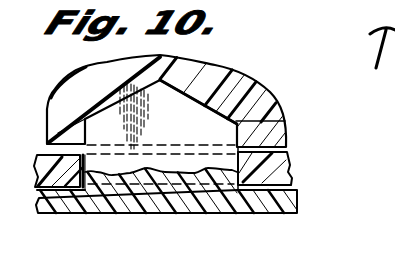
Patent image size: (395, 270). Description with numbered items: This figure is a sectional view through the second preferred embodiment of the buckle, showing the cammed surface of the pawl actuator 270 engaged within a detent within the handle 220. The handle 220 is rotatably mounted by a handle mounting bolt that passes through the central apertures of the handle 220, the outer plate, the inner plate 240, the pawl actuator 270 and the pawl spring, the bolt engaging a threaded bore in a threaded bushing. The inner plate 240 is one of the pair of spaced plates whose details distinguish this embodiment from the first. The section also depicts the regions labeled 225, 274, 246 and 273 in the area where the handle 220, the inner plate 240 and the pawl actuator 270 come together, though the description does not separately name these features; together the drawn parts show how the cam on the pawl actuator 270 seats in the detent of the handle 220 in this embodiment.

The handle 220 is at (246, 85).
The cavity 225 is at (186, 106).
The flange 274 is at (286, 114).
The inner plate 240 is at (292, 168).
The terminal 246 is at (88, 168).
The pawl actuator 270 is at (248, 208).
The adhesive layer 273 is at (158, 137).